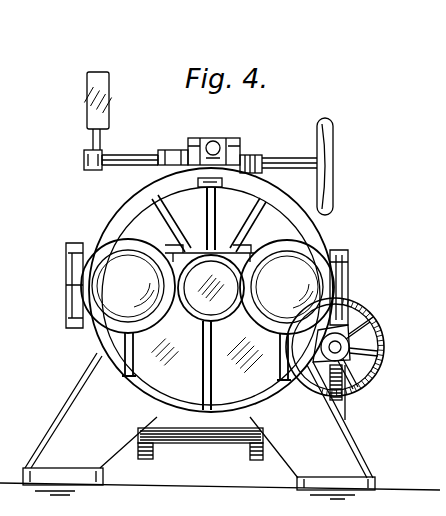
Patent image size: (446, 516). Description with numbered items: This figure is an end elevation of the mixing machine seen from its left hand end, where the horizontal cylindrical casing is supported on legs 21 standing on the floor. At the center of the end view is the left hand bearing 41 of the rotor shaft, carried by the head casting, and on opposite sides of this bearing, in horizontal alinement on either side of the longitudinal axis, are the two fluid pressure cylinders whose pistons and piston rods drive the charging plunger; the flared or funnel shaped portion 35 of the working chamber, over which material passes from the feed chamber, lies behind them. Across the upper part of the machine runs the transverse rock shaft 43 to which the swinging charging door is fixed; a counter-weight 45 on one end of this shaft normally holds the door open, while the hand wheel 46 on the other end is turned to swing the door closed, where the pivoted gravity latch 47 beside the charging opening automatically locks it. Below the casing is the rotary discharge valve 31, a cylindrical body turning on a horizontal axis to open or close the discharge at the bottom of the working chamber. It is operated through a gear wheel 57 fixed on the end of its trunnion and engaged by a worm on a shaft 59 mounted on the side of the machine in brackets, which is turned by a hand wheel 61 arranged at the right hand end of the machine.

The legs 21 is at (330, 447).
The rotary discharge valve 31 is at (202, 438).
The flared portion 35 is at (198, 183).
The left hand bearing 41 is at (215, 250).
The rock shaft 43 is at (132, 158).
The counter-weight 45 is at (87, 100).
The hand wheel 46 is at (334, 126).
The pivoted gravity latch 47 is at (216, 141).
The gear wheel 57 is at (344, 396).
The shaft 59 is at (341, 349).
The hand wheel 61 is at (368, 318).